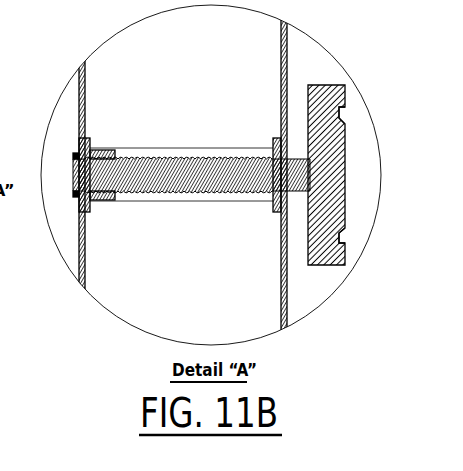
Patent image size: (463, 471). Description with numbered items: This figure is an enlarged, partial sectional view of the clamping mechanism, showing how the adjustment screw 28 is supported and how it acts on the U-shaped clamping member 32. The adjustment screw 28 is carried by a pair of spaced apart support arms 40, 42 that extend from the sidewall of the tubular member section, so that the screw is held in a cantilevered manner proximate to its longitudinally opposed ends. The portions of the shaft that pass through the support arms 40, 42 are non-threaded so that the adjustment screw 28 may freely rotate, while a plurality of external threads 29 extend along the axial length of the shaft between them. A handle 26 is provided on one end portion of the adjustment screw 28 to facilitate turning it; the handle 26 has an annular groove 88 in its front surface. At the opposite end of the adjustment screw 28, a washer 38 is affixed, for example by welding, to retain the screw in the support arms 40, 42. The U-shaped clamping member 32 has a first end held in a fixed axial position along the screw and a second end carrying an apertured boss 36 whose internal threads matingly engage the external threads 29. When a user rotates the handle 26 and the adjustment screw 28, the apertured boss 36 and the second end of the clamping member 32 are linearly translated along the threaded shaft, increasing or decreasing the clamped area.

The handle 26 is at (340, 168).
The adjustment screw 28 is at (191, 190).
The external threads 29 is at (181, 157).
The U-shaped clamping member 32 is at (270, 155).
The apertured boss 36 is at (97, 200).
The washer 38 is at (74, 194).
The support arm 40 is at (275, 155).
The support arm 42 is at (78, 213).
The annular groove 88 is at (344, 110).